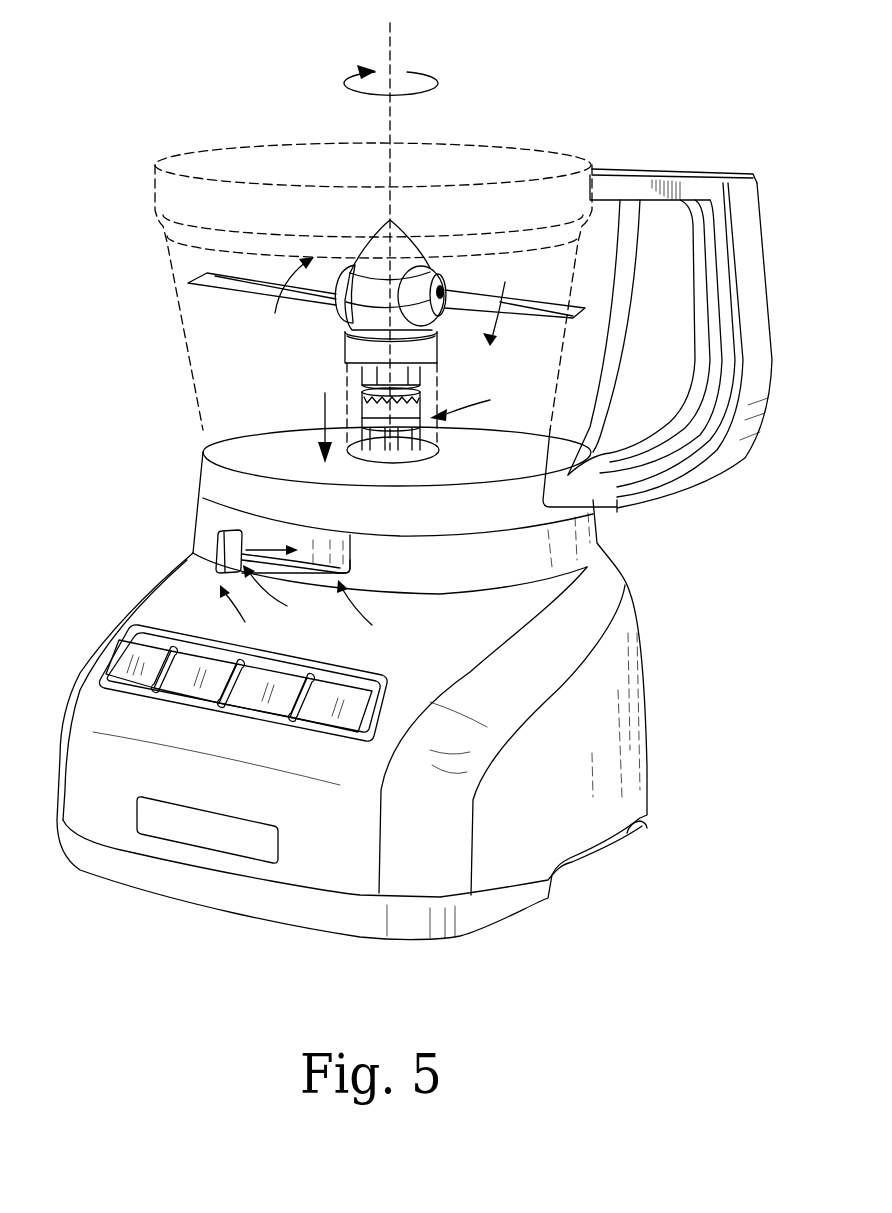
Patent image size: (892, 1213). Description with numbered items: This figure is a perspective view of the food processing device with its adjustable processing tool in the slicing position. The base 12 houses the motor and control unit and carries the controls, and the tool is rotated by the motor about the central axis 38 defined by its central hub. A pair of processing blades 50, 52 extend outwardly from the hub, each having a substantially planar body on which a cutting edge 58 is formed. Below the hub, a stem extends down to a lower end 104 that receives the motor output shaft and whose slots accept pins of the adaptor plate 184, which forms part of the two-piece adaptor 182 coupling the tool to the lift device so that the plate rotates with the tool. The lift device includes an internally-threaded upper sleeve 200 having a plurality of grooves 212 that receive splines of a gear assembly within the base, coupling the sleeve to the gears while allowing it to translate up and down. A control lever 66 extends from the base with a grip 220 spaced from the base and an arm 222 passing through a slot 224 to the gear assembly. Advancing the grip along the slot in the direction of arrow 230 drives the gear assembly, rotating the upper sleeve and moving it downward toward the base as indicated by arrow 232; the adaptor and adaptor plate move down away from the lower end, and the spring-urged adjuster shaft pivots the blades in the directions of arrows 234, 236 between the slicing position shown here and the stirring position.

The base 12 is at (628, 742).
The central axis 38 is at (390, 55).
The processing blade 50 is at (545, 302).
The processing blade 52 is at (250, 293).
The cutting edge 58 is at (223, 273).
The control lever 66 is at (390, 601).
The lower end 104 is at (423, 375).
The two-piece adaptor 182 is at (435, 406).
The adaptor plate 184 is at (363, 382).
The upper sleeve 200 is at (377, 450).
The grooves 212 is at (423, 435).
The grip 220 is at (215, 548).
The arm 222 is at (291, 590).
The slot 224 is at (373, 603).
The arrow 230 is at (257, 543).
The arrow 232 is at (320, 410).
The arrow 234 is at (487, 258).
The arrow 236 is at (282, 277).